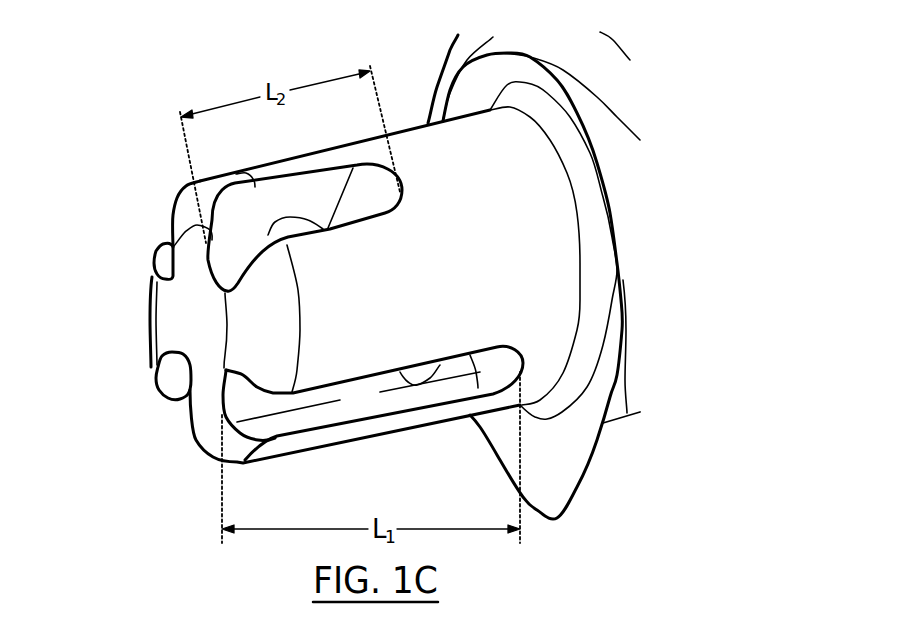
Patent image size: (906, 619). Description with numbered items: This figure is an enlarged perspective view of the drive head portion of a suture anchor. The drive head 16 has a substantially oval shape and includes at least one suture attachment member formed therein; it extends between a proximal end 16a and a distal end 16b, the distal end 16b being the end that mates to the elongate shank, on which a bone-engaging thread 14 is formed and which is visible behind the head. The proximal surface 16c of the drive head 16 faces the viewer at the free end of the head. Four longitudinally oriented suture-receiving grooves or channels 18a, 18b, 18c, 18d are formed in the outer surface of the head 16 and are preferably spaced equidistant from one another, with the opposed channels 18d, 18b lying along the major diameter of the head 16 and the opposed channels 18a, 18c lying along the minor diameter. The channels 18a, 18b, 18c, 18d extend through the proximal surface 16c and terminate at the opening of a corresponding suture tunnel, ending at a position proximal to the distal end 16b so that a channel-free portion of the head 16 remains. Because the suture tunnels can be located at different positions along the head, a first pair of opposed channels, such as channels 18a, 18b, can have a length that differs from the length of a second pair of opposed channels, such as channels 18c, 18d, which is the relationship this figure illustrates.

The bone-engaging thread 14 is at (563, 474).
The drive head 16 is at (473, 271).
The proximal end 16a is at (207, 168).
The distal end 16b is at (411, 110).
The proximal surface 16c is at (212, 334).
The suture-receiving channel 18a is at (327, 215).
The suture-receiving channel 18b is at (378, 412).
The suture-receiving channel 18c is at (174, 405).
The suture-receiving channel 18d is at (157, 238).